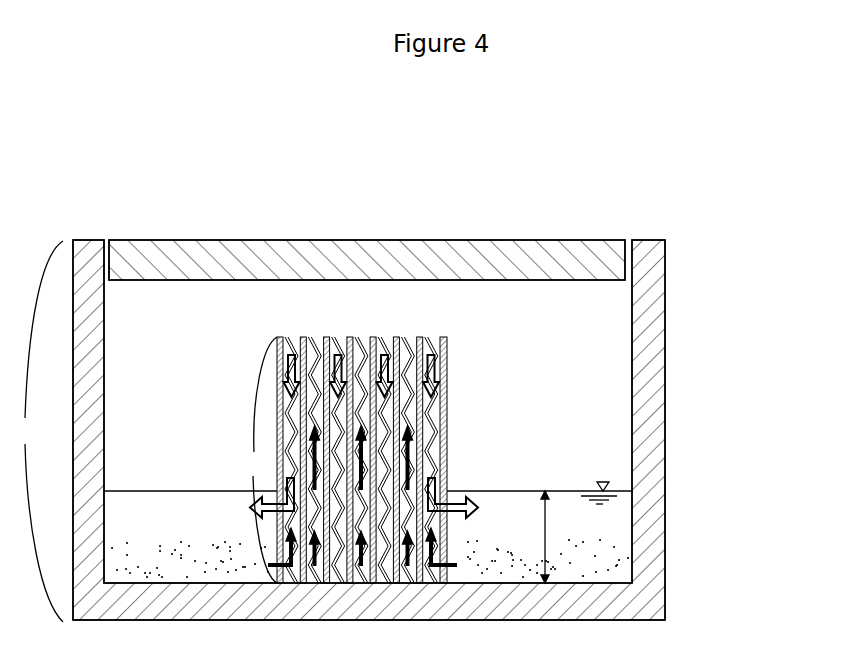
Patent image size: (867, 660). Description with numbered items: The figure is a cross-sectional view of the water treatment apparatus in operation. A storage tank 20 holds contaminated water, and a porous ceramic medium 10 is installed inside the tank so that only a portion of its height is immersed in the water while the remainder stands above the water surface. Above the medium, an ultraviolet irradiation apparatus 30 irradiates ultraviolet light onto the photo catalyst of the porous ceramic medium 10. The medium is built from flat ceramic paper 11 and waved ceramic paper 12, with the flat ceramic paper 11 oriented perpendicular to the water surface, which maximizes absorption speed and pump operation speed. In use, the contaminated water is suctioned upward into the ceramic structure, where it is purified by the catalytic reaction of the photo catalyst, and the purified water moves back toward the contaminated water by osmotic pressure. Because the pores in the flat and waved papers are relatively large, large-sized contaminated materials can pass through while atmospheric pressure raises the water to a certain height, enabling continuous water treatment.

The porous ceramic medium 10 is at (413, 384).
The flat ceramic paper 11 is at (443, 337).
The waved ceramic paper 12 is at (432, 336).
The storage tank 20 is at (657, 518).
The ultraviolet irradiation apparatus 30 is at (310, 250).